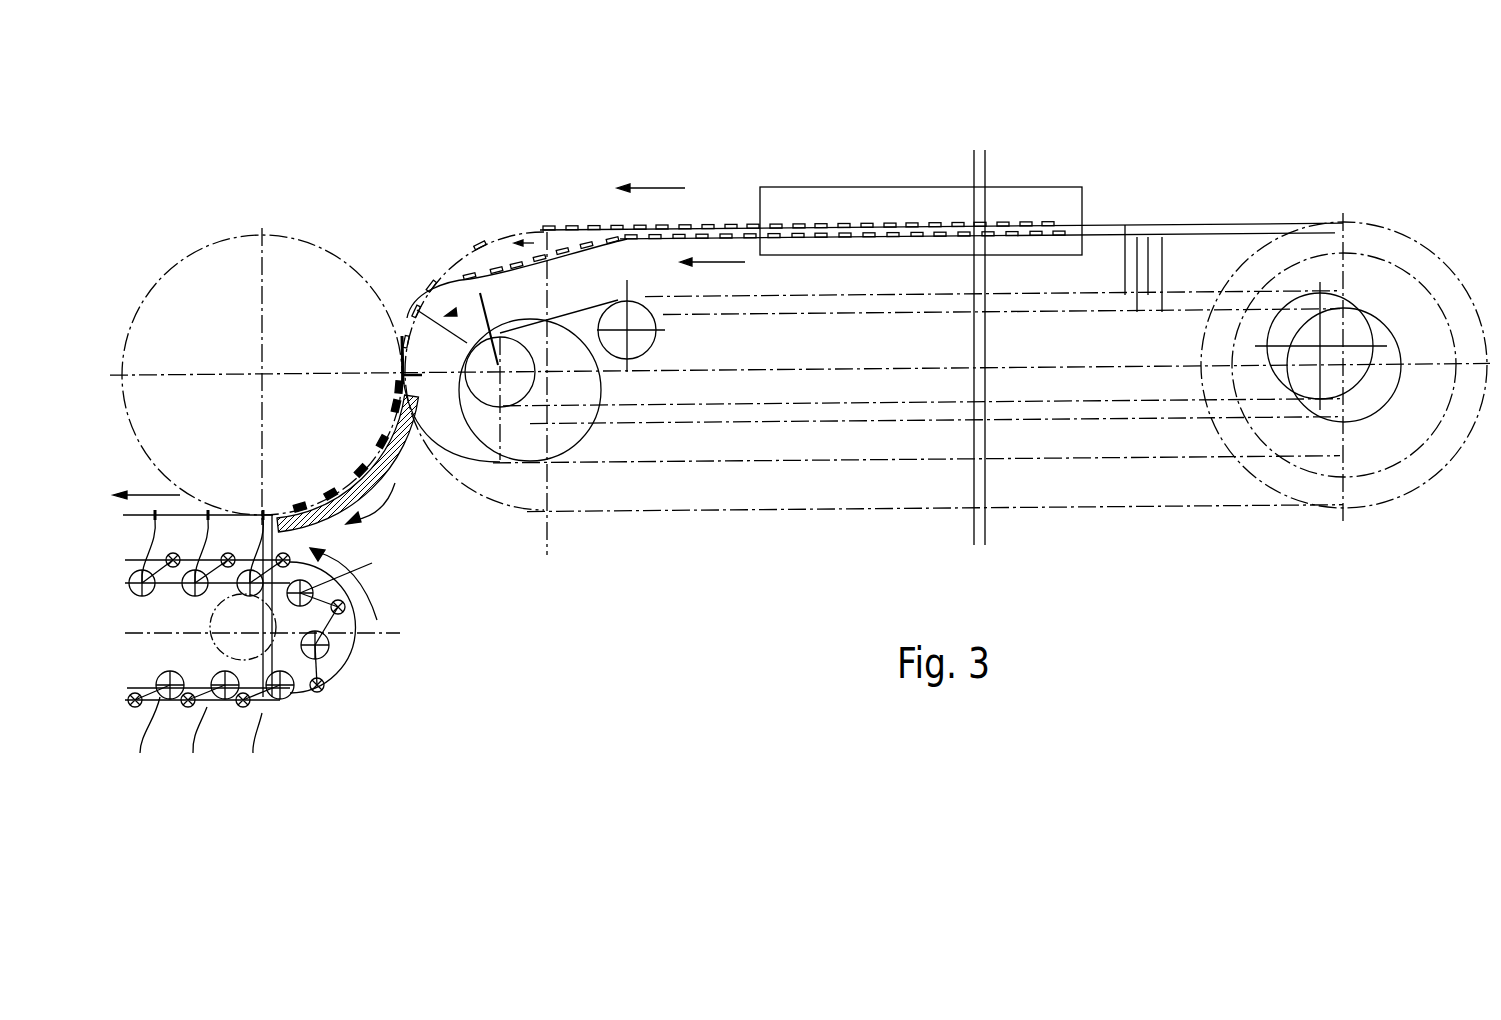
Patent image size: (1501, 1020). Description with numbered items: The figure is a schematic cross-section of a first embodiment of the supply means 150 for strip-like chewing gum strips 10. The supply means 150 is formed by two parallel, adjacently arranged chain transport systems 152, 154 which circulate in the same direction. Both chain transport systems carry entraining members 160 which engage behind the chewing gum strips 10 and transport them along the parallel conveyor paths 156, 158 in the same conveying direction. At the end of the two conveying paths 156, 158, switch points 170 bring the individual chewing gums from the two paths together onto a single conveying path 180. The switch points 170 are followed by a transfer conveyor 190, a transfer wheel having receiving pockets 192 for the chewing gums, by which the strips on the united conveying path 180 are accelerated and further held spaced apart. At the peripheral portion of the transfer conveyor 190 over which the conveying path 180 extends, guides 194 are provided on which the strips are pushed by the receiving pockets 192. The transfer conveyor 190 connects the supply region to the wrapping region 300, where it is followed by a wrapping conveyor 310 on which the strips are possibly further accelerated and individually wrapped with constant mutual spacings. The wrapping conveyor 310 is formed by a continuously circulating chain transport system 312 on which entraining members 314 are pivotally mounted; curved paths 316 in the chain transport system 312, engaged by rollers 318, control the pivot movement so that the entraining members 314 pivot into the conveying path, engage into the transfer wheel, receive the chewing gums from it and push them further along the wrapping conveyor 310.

The chewing gum strips 10 is at (683, 225).
The supply means 150 is at (1244, 179).
The chain transport system 152 is at (712, 427).
The chain transport system 154 is at (800, 403).
The conveyor path 156 is at (573, 230).
The conveyor path 158 is at (637, 240).
The entraining members 160 is at (1125, 250).
The switch points 170 is at (420, 312).
The single conveying path 180 is at (397, 400).
The transfer conveyor 190 is at (296, 268).
The receiving pockets 192 is at (373, 485).
The guides 194 is at (396, 467).
The wrapping region 300 is at (151, 794).
The wrapping conveyor 310 is at (312, 725).
The chain transport system 312 is at (345, 607).
The entraining members 314 is at (335, 680).
The curved paths 316 is at (329, 645).
The rollers 318 is at (324, 690).